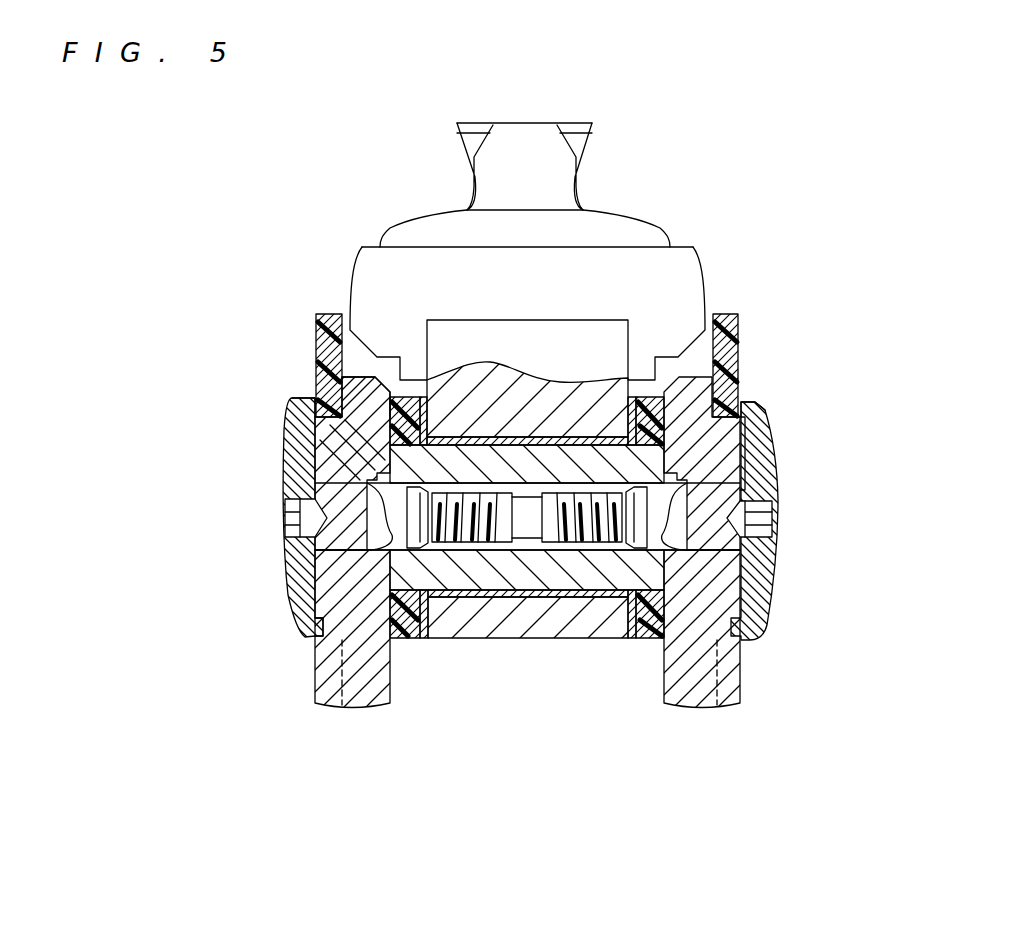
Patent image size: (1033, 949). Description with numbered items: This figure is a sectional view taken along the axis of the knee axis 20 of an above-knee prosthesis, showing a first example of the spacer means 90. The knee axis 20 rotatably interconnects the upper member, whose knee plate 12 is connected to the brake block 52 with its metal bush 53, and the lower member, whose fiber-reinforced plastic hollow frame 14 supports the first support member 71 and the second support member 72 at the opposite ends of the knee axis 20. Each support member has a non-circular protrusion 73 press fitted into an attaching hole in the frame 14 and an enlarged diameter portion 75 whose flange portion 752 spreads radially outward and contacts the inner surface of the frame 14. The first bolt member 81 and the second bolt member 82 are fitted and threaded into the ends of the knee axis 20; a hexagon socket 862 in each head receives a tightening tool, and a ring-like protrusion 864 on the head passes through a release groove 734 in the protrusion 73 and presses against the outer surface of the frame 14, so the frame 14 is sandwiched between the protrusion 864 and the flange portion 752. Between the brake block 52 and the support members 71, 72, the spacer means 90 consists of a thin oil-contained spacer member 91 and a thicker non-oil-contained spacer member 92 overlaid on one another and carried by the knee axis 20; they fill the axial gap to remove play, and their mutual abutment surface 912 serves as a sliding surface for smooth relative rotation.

The knee plate 12 is at (640, 232).
The hollow frame 14 is at (730, 356).
The knee axis 20 is at (568, 460).
The brake block 52 is at (507, 627).
The metal bush 53 is at (475, 594).
The first support member 71 is at (378, 663).
The second support member 72 is at (692, 663).
The protrusion 73 is at (318, 455).
The enlarged diameter portion 75 is at (363, 403).
The first bolt member 81 is at (284, 577).
The second bolt member 82 is at (777, 565).
The spacer means 90 is at (413, 641).
The spacer member 91 is at (432, 412).
The spacer member 92 is at (410, 407).
The release groove 734 is at (325, 640).
The flange portion 752 is at (695, 400).
The hexagon socket 862 is at (298, 520).
The protrusion 864 is at (311, 402).
The abutment surface 912 is at (632, 604).